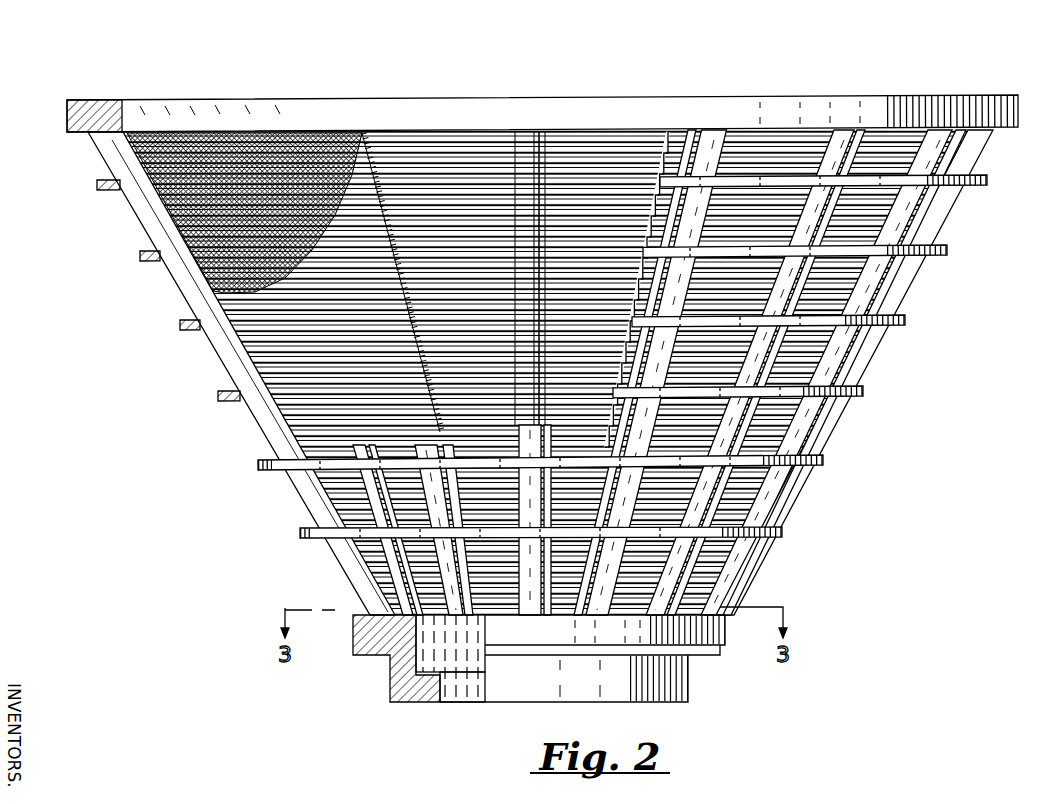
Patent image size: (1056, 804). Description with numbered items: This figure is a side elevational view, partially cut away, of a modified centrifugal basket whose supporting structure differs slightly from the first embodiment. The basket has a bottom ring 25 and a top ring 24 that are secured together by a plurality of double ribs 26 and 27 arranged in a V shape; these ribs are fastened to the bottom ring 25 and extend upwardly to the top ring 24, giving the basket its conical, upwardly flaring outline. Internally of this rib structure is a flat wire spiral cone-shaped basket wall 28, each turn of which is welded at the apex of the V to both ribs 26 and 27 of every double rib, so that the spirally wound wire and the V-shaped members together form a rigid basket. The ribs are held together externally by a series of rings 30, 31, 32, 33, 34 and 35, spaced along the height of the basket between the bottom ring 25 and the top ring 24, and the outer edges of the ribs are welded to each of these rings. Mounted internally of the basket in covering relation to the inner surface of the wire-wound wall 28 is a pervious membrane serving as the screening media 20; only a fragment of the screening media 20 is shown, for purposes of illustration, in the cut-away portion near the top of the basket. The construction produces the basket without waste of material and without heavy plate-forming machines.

The screening media 20 is at (352, 140).
The top ring 24 is at (975, 106).
The bottom ring 25 is at (405, 690).
The double rib 26 is at (250, 142).
The double rib 27 is at (232, 146).
The basket wall 28 is at (790, 357).
The ring 30 is at (785, 531).
The ring 31 is at (825, 462).
The ring 32 is at (225, 403).
The ring 33 is at (183, 332).
The ring 34 is at (140, 262).
The ring 35 is at (97, 186).